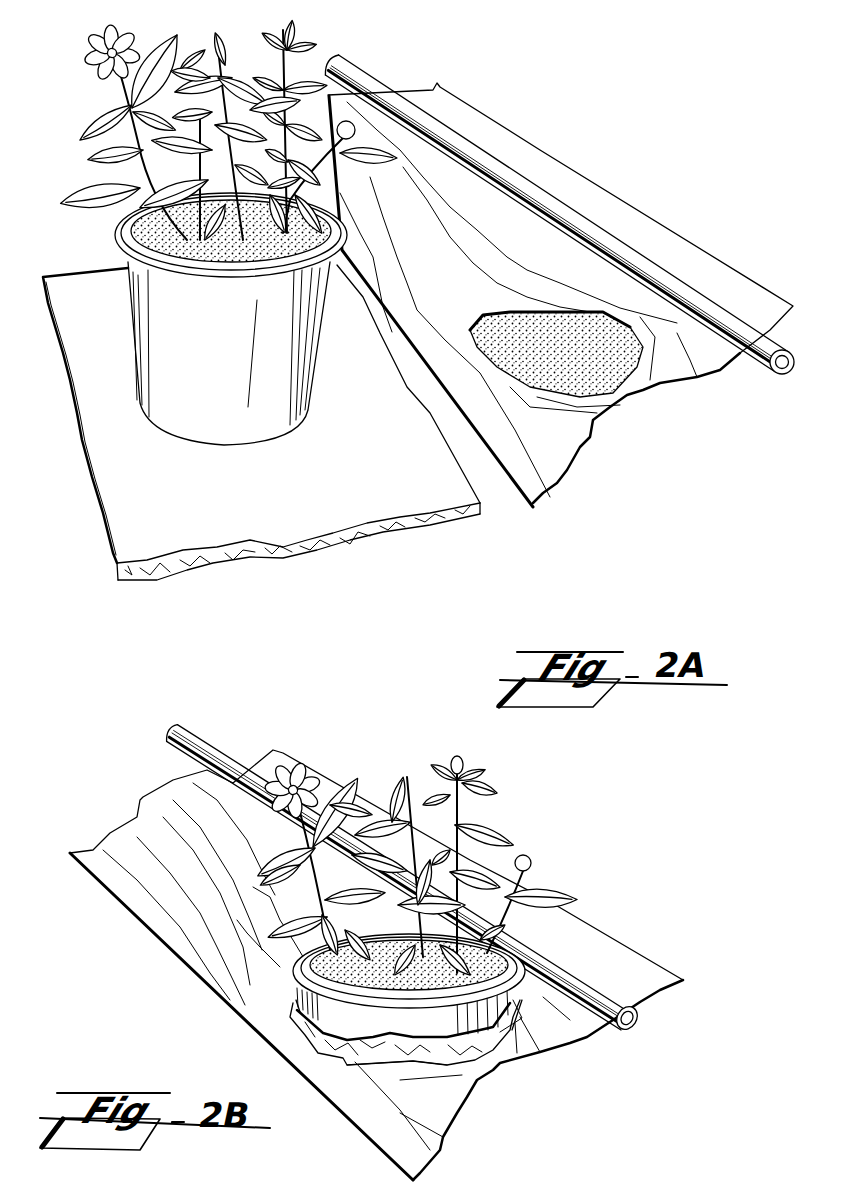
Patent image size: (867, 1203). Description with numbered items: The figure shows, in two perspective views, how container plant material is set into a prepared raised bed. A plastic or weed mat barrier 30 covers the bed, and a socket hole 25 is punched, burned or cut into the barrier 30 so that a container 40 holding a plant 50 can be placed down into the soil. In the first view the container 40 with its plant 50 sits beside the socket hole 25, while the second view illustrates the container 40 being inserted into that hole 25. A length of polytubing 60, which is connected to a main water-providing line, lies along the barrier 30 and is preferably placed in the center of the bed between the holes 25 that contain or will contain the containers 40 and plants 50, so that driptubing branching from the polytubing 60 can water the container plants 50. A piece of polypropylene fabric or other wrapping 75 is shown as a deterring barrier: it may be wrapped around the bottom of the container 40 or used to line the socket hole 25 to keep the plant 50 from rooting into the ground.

In FIG. 2A, the socket hole 25 is at (560, 312).
In FIG. 2B, the socket hole 25 is at (373, 1063).
In FIG. 2A, the weed mat barrier 30 is at (557, 438).
In FIG. 2B, the weed mat barrier 30 is at (497, 1068).
In FIG. 2A, the container 40 is at (277, 353).
In FIG. 2B, the container 40 is at (290, 978).
In FIG. 2A, the plant 50 is at (100, 167).
In FIG. 2B, the plant 50 is at (417, 777).
In FIG. 2A, the polytubing 60 is at (494, 158).
In FIG. 2B, the polytubing 60 is at (215, 747).
In FIG. 2A, the wrapping 75 is at (353, 467).
In FIG. 2B, the wrapping 75 is at (337, 1030).